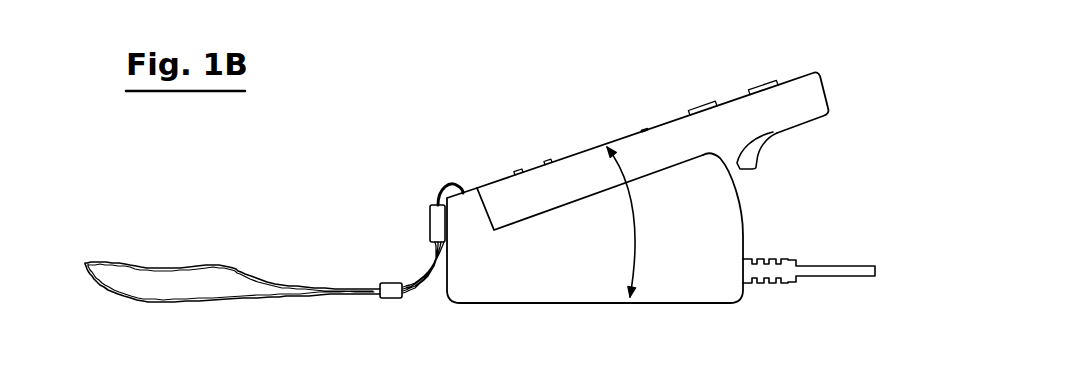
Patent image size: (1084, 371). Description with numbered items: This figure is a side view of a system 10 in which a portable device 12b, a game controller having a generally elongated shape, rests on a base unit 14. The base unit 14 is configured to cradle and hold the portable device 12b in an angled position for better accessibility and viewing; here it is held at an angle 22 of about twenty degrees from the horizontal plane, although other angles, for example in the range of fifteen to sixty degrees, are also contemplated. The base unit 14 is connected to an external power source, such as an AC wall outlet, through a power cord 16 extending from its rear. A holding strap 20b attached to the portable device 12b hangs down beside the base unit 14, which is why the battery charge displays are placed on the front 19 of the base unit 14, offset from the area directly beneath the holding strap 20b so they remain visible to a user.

The system 10 is at (637, 159).
The portable device 12b is at (737, 106).
The base unit 14 is at (718, 233).
The power cord 16 is at (808, 263).
The front 19 is at (447, 283).
The holding strap 20b is at (213, 263).
The angle 22 is at (636, 207).